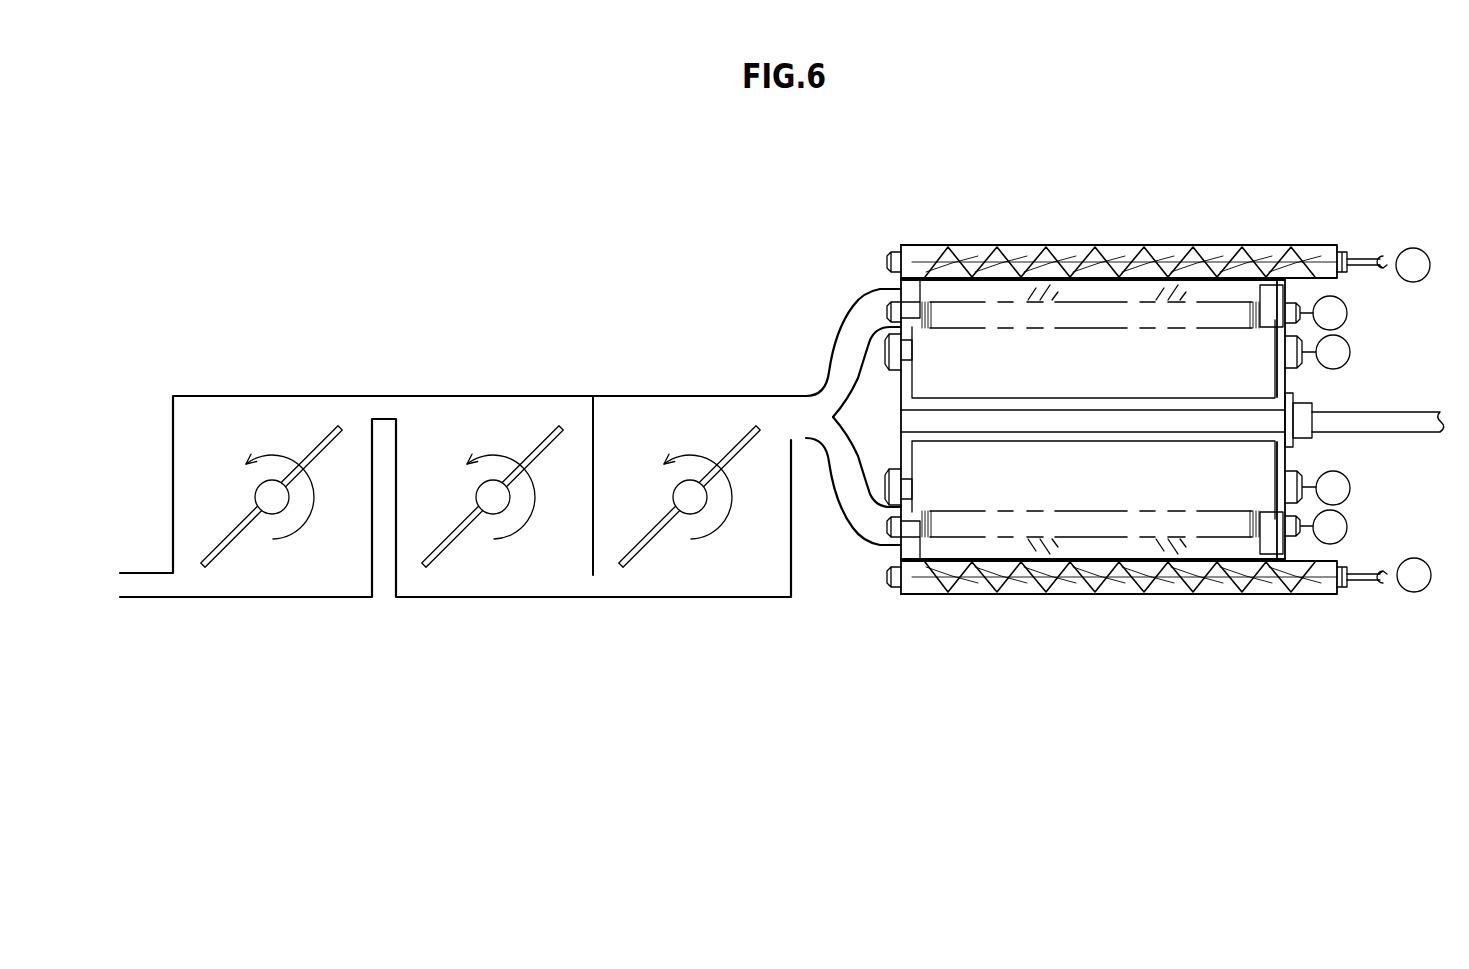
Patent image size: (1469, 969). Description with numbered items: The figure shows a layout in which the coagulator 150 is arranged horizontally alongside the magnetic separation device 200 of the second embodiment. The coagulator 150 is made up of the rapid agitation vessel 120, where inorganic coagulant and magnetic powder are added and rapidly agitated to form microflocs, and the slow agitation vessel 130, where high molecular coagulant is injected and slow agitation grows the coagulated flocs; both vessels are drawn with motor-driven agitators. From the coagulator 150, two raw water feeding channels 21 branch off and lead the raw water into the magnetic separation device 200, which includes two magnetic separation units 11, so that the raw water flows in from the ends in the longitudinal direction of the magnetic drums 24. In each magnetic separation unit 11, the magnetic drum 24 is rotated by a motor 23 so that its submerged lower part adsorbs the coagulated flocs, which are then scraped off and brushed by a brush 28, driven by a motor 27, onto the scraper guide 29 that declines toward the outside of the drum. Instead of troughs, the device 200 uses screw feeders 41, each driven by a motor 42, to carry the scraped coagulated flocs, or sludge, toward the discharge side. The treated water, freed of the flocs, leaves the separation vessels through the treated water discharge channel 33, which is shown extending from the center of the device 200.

The magnetic separation device 200 is at (1335, 155).
The magnetic separation unit 11 is at (1078, 222).
The raw water feeding channel 21 is at (852, 302).
The motor 23 is at (1352, 356).
The magnetic drum 24 is at (1287, 381).
The motor 27 is at (1349, 317).
The brush 28 is at (1215, 312).
The scraper guide 29 is at (1118, 287).
The treated water discharge channel 33 is at (1412, 410).
The screw feeder 41 is at (1297, 248).
The motor 42 is at (1410, 248).
The rapid agitation vessel 120 is at (286, 395).
The slow agitation vessel 130 is at (503, 395).
The coagulator 150 is at (263, 315).